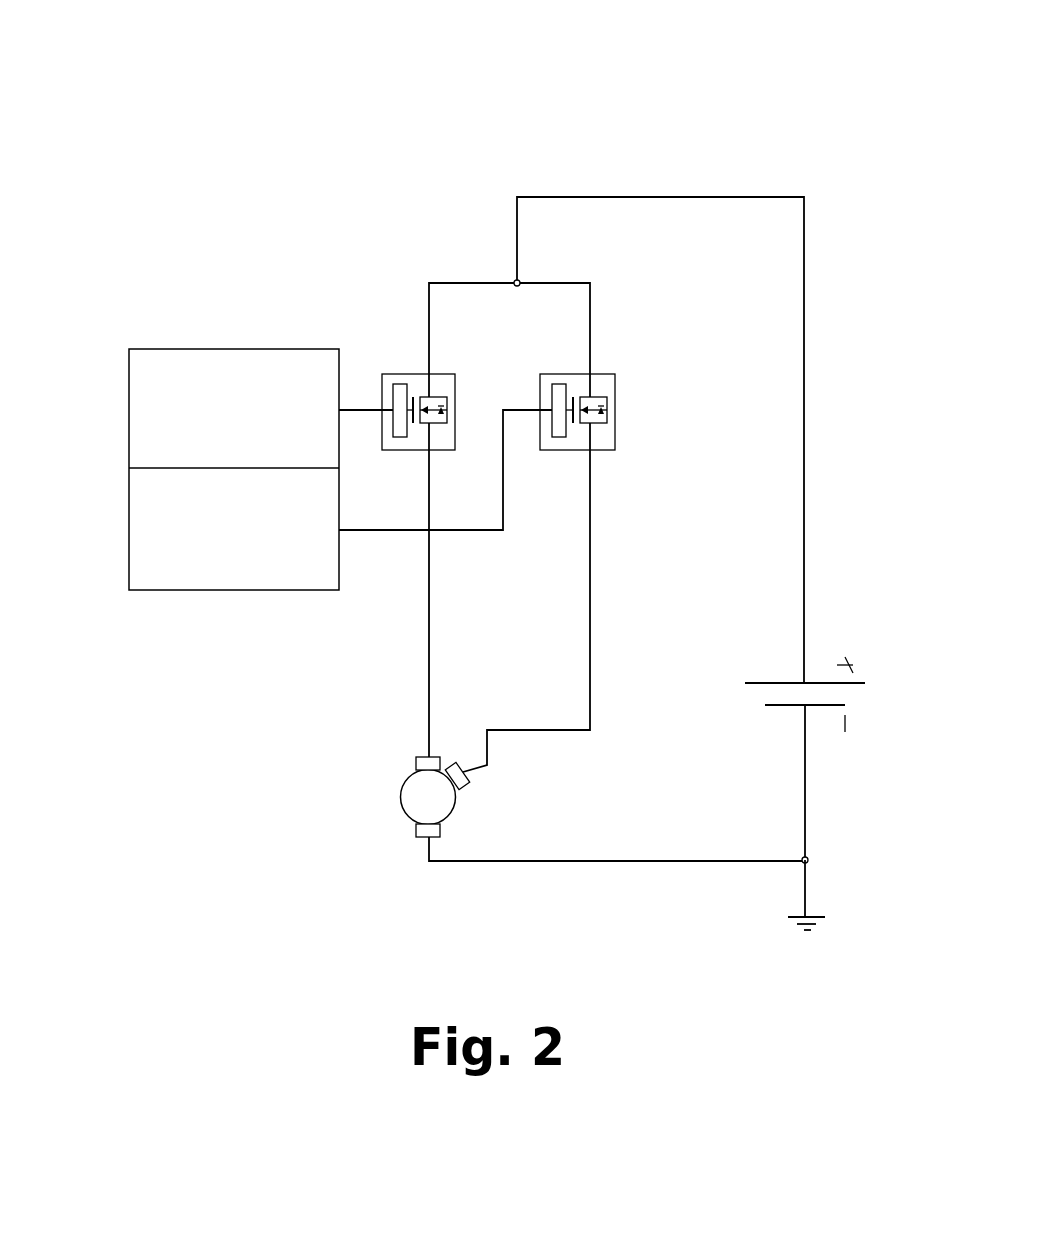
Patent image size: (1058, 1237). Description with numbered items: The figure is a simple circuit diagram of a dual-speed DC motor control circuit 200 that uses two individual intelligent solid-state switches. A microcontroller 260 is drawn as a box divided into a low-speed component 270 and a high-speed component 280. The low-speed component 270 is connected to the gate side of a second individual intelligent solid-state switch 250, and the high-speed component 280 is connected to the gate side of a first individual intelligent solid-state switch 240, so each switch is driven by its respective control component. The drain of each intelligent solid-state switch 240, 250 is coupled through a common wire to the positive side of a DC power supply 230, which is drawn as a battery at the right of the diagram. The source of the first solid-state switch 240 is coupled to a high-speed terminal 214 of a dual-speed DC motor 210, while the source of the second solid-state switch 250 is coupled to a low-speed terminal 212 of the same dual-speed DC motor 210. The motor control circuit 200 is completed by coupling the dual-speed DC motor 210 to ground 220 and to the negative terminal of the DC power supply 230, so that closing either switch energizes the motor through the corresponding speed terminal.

The dual-speed DC motor control circuit 200 is at (307, 140).
The dual-speed DC motor 210 is at (388, 788).
The low-speed terminal 212 is at (417, 765).
The high-speed terminal 214 is at (465, 789).
The ground 220 is at (807, 893).
The DC power supply 230 is at (863, 683).
The first individual intelligent solid-state switch 240 is at (613, 373).
The second individual intelligent solid-state switch 250 is at (417, 372).
The microcontroller 260 is at (164, 318).
The low-speed component 270 is at (129, 412).
The high-speed component 280 is at (129, 525).